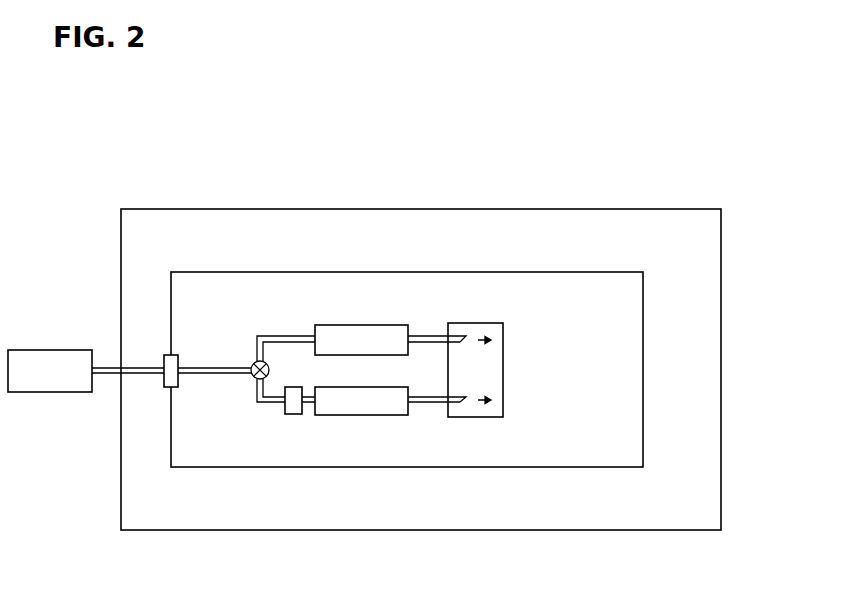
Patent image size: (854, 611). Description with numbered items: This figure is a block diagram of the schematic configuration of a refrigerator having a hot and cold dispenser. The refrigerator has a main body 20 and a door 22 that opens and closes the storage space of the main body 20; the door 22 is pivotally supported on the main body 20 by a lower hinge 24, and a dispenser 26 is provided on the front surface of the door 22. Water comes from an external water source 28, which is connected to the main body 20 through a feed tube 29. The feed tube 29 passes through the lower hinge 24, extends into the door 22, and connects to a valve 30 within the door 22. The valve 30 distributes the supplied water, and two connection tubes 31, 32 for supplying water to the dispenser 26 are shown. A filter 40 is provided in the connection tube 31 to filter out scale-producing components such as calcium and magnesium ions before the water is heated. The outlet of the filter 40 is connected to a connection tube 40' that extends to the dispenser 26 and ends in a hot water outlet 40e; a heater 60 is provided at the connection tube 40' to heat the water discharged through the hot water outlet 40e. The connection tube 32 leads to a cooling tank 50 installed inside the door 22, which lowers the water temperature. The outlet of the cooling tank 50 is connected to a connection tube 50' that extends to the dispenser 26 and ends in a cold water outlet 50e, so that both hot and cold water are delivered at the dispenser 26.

The main body of the refrigerator 20 is at (721, 368).
The door 22 is at (233, 272).
The lower hinge 24 is at (171, 387).
The dispenser 26 is at (494, 417).
The external water source 28 is at (48, 392).
The feed tube 29 is at (141, 374).
The valve 30 is at (253, 378).
The connection tube 31 is at (262, 404).
The connection tube 32 is at (285, 337).
The filter 40 is at (309, 479).
The connection tube 40' is at (435, 484).
The hot water outlet 40e is at (465, 402).
The cooling tank 50 is at (361, 259).
The connection tube 50' is at (435, 253).
The cold water outlet 50e is at (466, 341).
The heater 60 is at (360, 415).